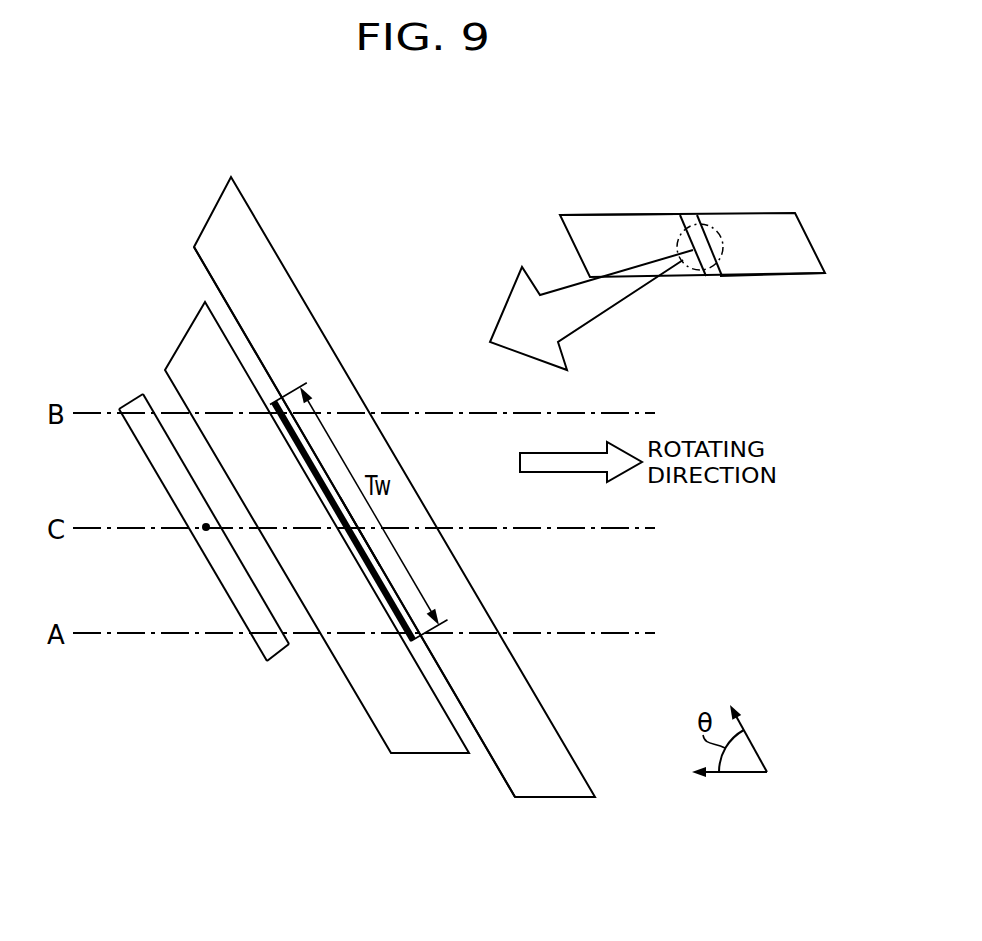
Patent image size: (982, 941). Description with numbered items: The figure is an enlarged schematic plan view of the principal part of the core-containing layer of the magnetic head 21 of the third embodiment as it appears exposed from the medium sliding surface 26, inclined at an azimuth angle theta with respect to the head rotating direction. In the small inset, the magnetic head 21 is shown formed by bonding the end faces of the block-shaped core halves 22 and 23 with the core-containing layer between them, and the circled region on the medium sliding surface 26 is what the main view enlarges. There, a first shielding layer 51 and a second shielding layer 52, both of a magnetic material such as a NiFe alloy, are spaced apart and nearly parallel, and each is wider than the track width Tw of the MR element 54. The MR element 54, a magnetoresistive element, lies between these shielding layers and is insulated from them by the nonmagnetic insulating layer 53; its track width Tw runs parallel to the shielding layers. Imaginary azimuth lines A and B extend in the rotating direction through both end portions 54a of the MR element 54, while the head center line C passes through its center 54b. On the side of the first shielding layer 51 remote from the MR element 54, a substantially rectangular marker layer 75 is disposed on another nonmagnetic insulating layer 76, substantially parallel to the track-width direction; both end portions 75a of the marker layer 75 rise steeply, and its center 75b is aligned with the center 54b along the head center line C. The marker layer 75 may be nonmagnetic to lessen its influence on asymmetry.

The magnetic head 21 is at (780, 211).
The core half 22 is at (790, 270).
The core half 23 is at (613, 227).
The medium sliding surface 26 is at (685, 220).
The first shielding layer 51 is at (192, 343).
The second shielding layer 52 is at (225, 263).
The nonmagnetic insulating layer 53 is at (245, 350).
The MR element 54 is at (300, 440).
The end portions of the MR element 54a is at (274, 400).
The center of the MR element 54b is at (372, 540).
The marker layer 75 is at (177, 480).
The end portions of the marker layer 75a is at (130, 403).
The center of the marker layer 75b is at (203, 538).
The nonmagnetic insulating layer 76 is at (283, 602).